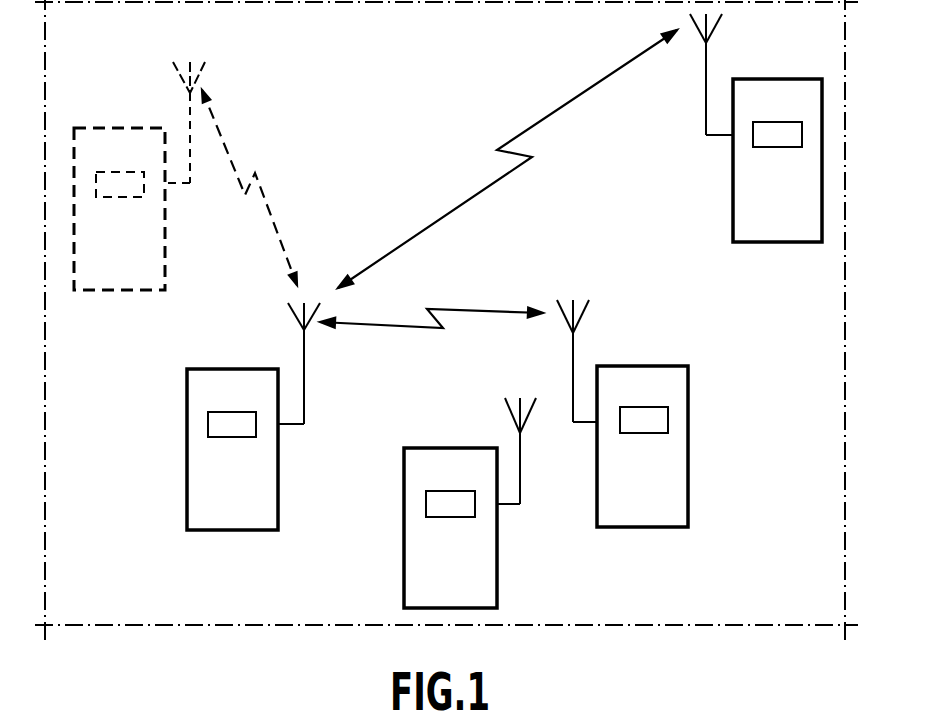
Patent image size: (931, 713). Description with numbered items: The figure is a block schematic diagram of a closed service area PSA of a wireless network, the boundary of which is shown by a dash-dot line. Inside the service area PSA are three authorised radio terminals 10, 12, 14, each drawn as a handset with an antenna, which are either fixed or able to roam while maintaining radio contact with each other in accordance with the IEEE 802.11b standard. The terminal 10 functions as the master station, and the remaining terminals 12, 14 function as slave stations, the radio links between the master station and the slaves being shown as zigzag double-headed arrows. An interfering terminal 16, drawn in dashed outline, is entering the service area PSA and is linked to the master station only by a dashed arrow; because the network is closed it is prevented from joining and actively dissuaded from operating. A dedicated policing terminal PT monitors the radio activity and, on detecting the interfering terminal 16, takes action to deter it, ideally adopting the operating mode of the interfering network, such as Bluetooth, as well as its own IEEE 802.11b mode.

The radio terminal 10 is at (204, 472).
The radio terminal 12 is at (673, 468).
The radio terminal 14 is at (748, 182).
The interfering terminal 16 is at (150, 272).
The policing terminal PT is at (480, 592).
The service area PSA is at (735, 623).